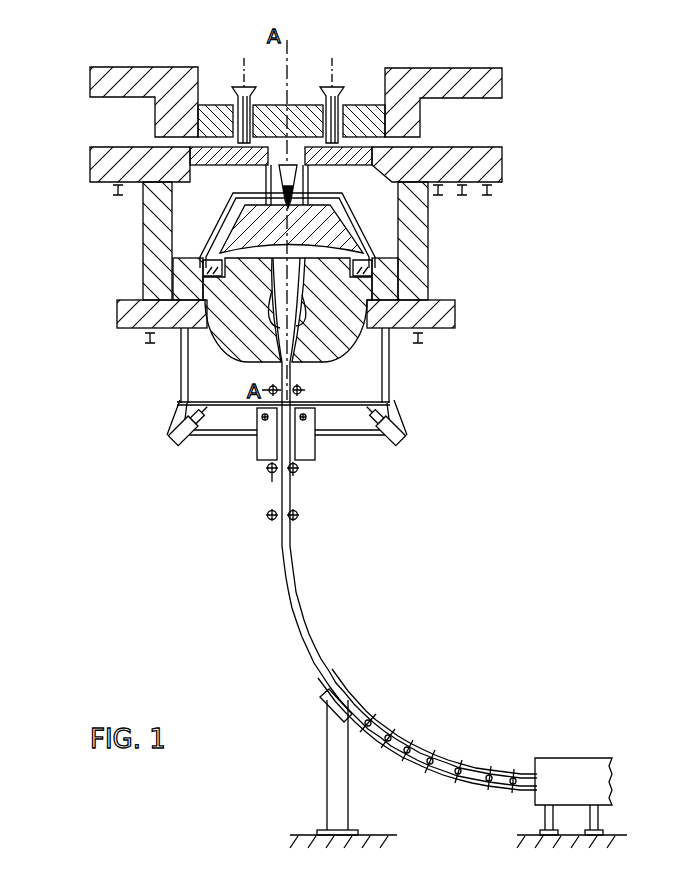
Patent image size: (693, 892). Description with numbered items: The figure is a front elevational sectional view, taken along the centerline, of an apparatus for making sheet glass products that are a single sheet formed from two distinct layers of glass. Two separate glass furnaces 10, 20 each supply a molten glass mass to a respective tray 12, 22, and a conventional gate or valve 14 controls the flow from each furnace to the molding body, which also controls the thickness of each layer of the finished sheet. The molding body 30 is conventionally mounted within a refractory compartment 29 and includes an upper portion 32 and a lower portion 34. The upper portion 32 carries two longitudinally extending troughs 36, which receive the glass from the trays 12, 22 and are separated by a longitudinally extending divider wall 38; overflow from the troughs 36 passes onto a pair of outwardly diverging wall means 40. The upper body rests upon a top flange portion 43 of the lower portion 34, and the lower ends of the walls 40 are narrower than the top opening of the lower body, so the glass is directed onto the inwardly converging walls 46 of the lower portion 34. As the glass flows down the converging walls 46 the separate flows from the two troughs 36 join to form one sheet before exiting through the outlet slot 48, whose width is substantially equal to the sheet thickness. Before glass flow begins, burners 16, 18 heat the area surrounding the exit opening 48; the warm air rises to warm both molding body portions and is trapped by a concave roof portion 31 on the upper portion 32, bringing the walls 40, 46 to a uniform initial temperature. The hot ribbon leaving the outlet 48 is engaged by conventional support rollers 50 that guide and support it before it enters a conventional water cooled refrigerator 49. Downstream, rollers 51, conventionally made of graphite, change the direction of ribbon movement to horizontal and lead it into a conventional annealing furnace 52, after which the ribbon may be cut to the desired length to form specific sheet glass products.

The glass furnace 10 is at (115, 67).
The tray 12 is at (223, 136).
The gate or valve 14 is at (254, 92).
The burner 16 is at (396, 444).
The burner 18 is at (177, 437).
The glass furnace 20 is at (423, 70).
The tray 22 is at (364, 148).
The refractory compartment 29 is at (432, 282).
The molding body 30 is at (170, 270).
The concave roof portion 31 is at (353, 256).
The upper portion 32 is at (198, 236).
The lower portion 34 is at (224, 333).
The troughs 36 is at (252, 200).
The divider wall 38 is at (285, 182).
The diverging wall means 40 is at (226, 236).
The top flange portion 43 is at (388, 258).
The inwardly converging walls 46 is at (264, 330).
The outlet slot 48 is at (277, 361).
The refrigerator 49 is at (257, 458).
The support rollers 50 is at (303, 390).
The rollers 51 is at (299, 468).
The annealing furnace 52 is at (563, 758).